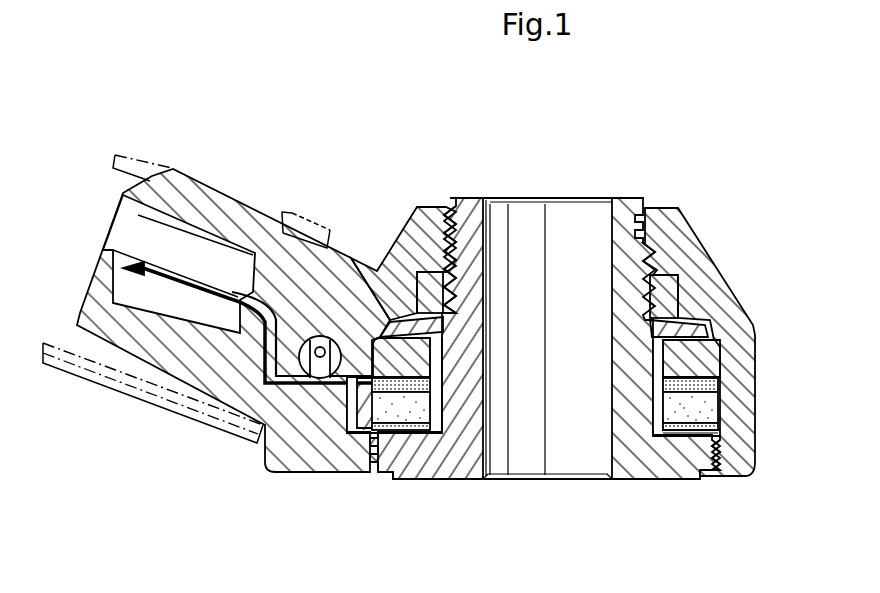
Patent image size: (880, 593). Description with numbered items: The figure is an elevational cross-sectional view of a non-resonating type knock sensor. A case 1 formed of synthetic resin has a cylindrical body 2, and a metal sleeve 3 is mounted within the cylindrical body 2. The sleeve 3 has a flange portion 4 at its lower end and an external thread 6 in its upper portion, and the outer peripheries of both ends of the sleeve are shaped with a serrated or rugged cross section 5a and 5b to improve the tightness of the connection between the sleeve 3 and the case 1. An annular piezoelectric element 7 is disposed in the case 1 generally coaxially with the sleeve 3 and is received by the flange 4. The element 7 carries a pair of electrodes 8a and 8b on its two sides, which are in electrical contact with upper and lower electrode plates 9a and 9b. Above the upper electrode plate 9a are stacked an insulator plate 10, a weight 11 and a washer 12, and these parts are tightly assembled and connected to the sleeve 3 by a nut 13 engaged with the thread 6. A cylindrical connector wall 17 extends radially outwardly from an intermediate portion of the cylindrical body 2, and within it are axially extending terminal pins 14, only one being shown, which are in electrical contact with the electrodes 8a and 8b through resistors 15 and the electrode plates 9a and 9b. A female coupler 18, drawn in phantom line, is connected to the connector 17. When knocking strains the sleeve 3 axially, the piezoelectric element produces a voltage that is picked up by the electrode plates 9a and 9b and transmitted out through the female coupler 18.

The case 1 is at (698, 260).
The cylindrical body 2 is at (748, 433).
The sleeve 3 is at (460, 455).
The flange portion 4 is at (407, 474).
The serrated cross section 5a is at (447, 225).
The serrated cross section 5b is at (371, 448).
The external thread 6 is at (389, 244).
The annular piezoelectric element 7 is at (678, 410).
The electrode 8a is at (717, 408).
The electrode 8b is at (718, 428).
The upper electrode plate 9a is at (718, 387).
The lower electrode plate 9b is at (690, 425).
The insulator plate 10 is at (722, 375).
The weight 11 is at (712, 350).
The washer 12 is at (390, 332).
The nut 13 is at (664, 276).
The terminal pins 14 is at (125, 268).
The resistors 15 is at (318, 360).
The connector wall 17 is at (186, 197).
The female coupler 18 is at (107, 393).